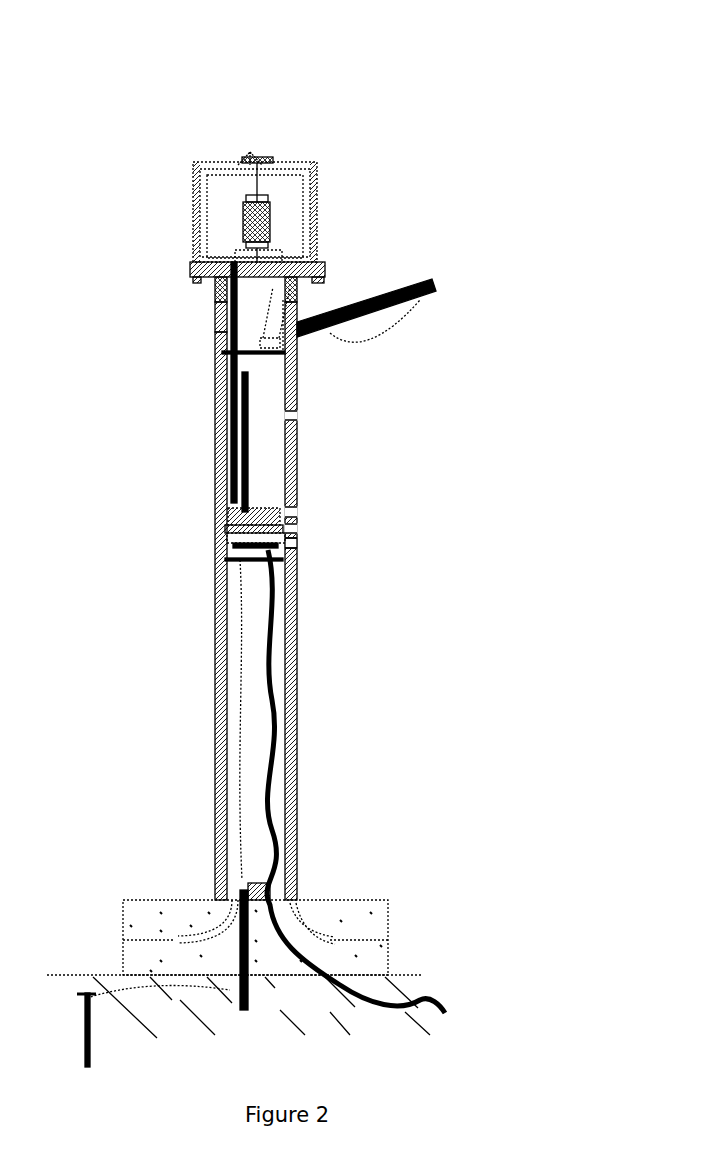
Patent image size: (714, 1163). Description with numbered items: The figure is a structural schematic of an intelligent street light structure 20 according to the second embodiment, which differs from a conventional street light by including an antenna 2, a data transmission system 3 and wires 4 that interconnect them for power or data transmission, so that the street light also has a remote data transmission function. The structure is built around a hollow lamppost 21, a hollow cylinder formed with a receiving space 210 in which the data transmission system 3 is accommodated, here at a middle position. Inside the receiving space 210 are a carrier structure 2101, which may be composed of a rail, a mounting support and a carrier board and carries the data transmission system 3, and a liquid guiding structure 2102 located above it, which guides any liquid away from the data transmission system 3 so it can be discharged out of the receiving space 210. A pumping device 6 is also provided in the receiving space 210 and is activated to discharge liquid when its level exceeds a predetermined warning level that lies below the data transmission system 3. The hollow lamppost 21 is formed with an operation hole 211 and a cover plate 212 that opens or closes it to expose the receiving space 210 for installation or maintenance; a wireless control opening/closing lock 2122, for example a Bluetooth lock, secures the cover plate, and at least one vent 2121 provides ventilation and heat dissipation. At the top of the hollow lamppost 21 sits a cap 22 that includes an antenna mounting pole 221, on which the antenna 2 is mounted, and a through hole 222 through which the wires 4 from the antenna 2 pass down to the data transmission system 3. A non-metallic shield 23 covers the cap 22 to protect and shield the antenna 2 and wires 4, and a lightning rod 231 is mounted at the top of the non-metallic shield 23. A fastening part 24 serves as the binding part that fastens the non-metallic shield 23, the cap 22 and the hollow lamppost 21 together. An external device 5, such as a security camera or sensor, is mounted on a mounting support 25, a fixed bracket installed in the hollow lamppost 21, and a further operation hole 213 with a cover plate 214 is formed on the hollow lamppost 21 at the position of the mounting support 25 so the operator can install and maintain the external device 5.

The intelligent street light structure 20 is at (327, 112).
The non-metallic shield 23 is at (195, 165).
The fastening part 24 is at (190, 266).
The antenna mounting pole 221 is at (262, 186).
The lightning rod 231 is at (250, 142).
The antenna 2 is at (277, 214).
The through hole 222 is at (276, 258).
The cap 22 is at (200, 286).
The operation hole 213 is at (215, 313).
The cover plate 214 is at (215, 342).
The hollow lamppost 21 is at (298, 448).
The vent 2121 is at (298, 413).
The wireless control opening/closing lock 2122 is at (298, 541).
The external device 5 is at (300, 345).
The mounting support 25 is at (298, 385).
The liquid guiding structure 2102 is at (222, 353).
The wires 4 is at (222, 428).
The receiving space 210 is at (276, 476).
The data transmission system 3 is at (232, 543).
The operation hole 211 is at (345, 532).
The cover plate 212 is at (298, 553).
The carrier structure 2101 is at (220, 556).
The pumping device 6 is at (262, 882).